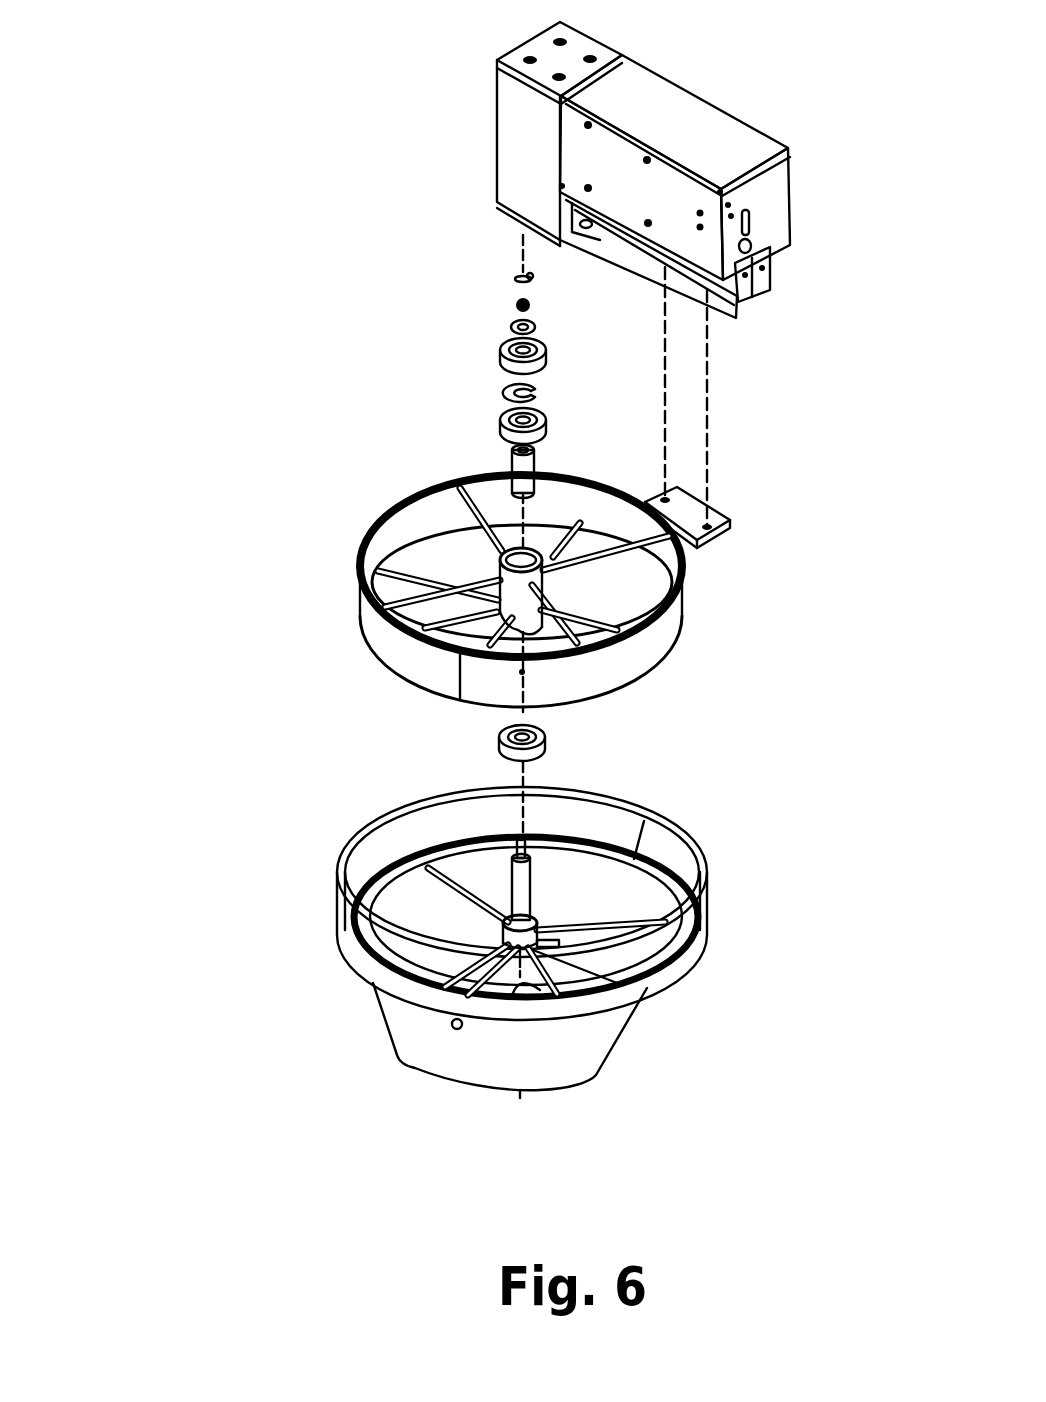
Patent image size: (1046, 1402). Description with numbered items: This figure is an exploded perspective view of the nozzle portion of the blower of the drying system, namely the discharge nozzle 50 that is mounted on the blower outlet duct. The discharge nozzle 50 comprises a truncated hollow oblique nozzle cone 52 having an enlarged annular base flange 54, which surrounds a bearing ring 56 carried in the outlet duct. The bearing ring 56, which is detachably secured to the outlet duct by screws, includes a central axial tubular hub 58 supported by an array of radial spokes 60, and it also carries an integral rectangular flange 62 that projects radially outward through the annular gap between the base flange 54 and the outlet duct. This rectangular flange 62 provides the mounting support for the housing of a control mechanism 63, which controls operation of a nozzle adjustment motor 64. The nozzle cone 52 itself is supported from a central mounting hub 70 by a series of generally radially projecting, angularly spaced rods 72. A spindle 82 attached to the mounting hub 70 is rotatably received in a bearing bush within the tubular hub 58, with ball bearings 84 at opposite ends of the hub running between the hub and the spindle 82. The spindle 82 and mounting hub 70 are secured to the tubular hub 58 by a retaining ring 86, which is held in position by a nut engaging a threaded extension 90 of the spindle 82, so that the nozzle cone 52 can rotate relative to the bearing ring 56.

The discharge nozzle 50 is at (290, 765).
The nozzle cone 52 is at (421, 1056).
The annular base flange 54 is at (355, 962).
The bearing ring 56 is at (617, 673).
The tubular hub 58 is at (508, 616).
The radial spokes 60 is at (463, 521).
The rectangular flange 62 is at (697, 553).
The control mechanism 63 is at (681, 100).
The nozzle adjustment motor 64 is at (518, 117).
The mounting hub 70 is at (640, 992).
The rods 72 is at (490, 978).
The spindle 82 is at (523, 890).
The ball bearings 84 is at (497, 433).
The retaining ring 86 is at (497, 352).
The threaded extension 90 is at (522, 836).